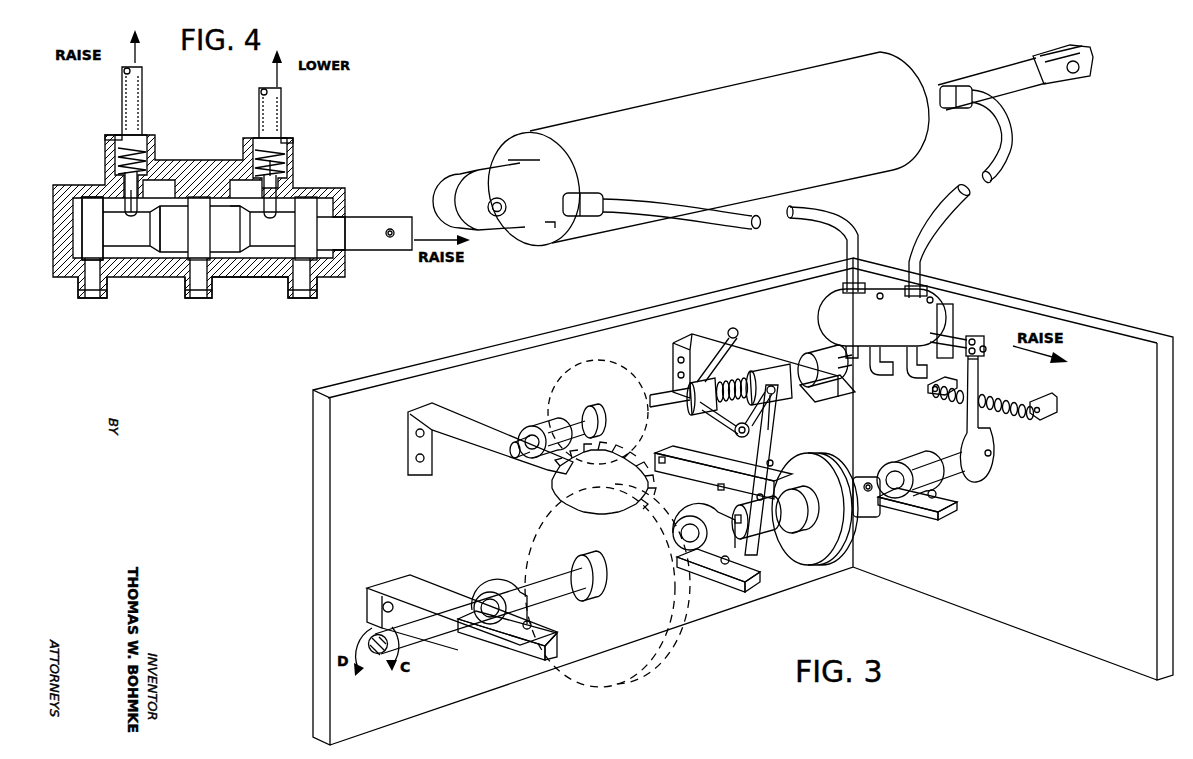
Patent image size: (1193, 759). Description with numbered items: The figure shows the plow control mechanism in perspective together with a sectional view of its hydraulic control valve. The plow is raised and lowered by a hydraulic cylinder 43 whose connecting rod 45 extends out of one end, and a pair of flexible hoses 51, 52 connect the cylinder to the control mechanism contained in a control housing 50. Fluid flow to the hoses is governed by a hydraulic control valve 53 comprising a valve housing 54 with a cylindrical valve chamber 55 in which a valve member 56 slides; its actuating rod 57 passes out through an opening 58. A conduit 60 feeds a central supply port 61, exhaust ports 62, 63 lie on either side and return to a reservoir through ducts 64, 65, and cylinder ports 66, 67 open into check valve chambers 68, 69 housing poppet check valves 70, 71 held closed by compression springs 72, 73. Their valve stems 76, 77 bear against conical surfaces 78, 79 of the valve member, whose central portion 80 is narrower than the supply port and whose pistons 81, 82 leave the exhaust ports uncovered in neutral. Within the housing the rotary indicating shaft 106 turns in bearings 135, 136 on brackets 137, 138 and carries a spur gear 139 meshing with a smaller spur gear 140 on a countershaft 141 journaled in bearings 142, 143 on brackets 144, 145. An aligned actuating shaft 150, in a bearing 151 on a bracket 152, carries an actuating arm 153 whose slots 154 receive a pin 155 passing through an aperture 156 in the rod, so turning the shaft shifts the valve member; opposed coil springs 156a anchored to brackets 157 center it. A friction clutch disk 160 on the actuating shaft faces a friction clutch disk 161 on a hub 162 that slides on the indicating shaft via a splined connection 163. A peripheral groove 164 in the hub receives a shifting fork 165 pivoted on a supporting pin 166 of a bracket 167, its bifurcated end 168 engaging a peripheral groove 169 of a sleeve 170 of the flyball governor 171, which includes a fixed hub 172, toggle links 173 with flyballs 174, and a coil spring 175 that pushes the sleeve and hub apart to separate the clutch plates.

In FIG. 3, the hydraulic cylinder 43 is at (870, 160).
In FIG. 3, the connecting rod 45 is at (1022, 80).
In FIG. 3, the control housing 50 is at (313, 527).
In FIG. 4, the flexible hose 51 is at (287, 92).
In FIG. 3, the flexible hose 51 is at (922, 235).
In FIG. 4, the flexible hose 52 is at (143, 88).
In FIG. 3, the flexible hose 52 is at (860, 238).
In FIG. 4, the hydraulic control valve 53 is at (315, 158).
In FIG. 3, the hydraulic control valve 53 is at (851, 323).
In FIG. 4, the valve housing 54 is at (330, 188).
In FIG. 3, the valve housing 54 is at (880, 327).
In FIG. 4, the valve chamber 55 is at (262, 277).
In FIG. 4, the valve member 56 is at (163, 246).
In FIG. 4, the actuating rod 57 is at (372, 218).
In FIG. 3, the actuating rod 57 is at (960, 334).
In FIG. 4, the opening 58 is at (340, 250).
In FIG. 4, the conduit 60 is at (188, 295).
In FIG. 3, the conduit 60 is at (878, 370).
In FIG. 4, the supply port 61 is at (196, 282).
In FIG. 4, the exhaust port 62 is at (93, 285).
In FIG. 4, the exhaust port 63 is at (300, 290).
In FIG. 4, the exhaust duct 64 is at (80, 284).
In FIG. 3, the exhaust duct 64 is at (846, 348).
In FIG. 4, the exhaust duct 65 is at (316, 293).
In FIG. 3, the exhaust duct 65 is at (914, 370).
In FIG. 4, the cylinder port 66 is at (188, 228).
In FIG. 4, the cylinder port 67 is at (236, 200).
In FIG. 4, the check valve chamber 68 is at (115, 152).
In FIG. 4, the check valve chamber 69 is at (256, 150).
In FIG. 4, the check valve 70 is at (125, 176).
In FIG. 4, the check valve 71 is at (255, 158).
In FIG. 4, the compression spring 72 is at (148, 138).
In FIG. 4, the compression spring 73 is at (291, 141).
In FIG. 4, the valve stem 76 is at (139, 176).
In FIG. 4, the valve stem 77 is at (282, 185).
In FIG. 4, the conical surface 78 is at (148, 243).
In FIG. 4, the conical surface 79 is at (271, 243).
In FIG. 4, the central portion 80 is at (201, 247).
In FIG. 4, the piston 81 is at (103, 238).
In FIG. 4, the piston 82 is at (306, 237).
In FIG. 3, the rotary indicating shaft 106 is at (420, 635).
In FIG. 3, the bearing 135 is at (498, 583).
In FIG. 3, the bearing 136 is at (708, 520).
In FIG. 3, the bracket 137 is at (428, 590).
In FIG. 3, the bracket 138 is at (750, 585).
In FIG. 3, the spur gear 139 is at (652, 494).
In FIG. 3, the spur gear 140 is at (626, 460).
In FIG. 3, the countershaft 141 is at (570, 428).
In FIG. 3, the bearing 142 is at (540, 425).
In FIG. 3, the bearing 143 is at (805, 352).
In FIG. 3, the bracket 144 is at (456, 430).
In FIG. 3, the bracket 145 is at (688, 336).
In FIG. 3, the actuating shaft 150 is at (953, 470).
In FIG. 3, the bearing 151 is at (912, 460).
In FIG. 3, the bracket 152 is at (950, 515).
In FIG. 3, the actuating arm 153 is at (978, 428).
In FIG. 3, the vertical slot 154 is at (979, 360).
In FIG. 3, the pin 155 is at (980, 343).
In FIG. 4, the aperture 156 is at (392, 240).
In FIG. 3, the coil spring 156a is at (975, 386).
In FIG. 3, the bracket 157 is at (932, 395).
In FIG. 3, the friction clutch disk 160 is at (832, 535).
In FIG. 3, the friction clutch disk 161 is at (830, 560).
In FIG. 3, the hub 162 is at (805, 568).
In FIG. 3, the splined connection 163 is at (766, 540).
In FIG. 3, the peripheral groove 164 is at (752, 533).
In FIG. 3, the shifting fork 165 is at (752, 500).
In FIG. 3, the supporting pin 166 is at (758, 493).
In FIG. 3, the bracket 167 is at (683, 462).
In FIG. 3, the bifurcated end 168 is at (775, 392).
In FIG. 3, the peripheral groove 169 is at (738, 378).
In FIG. 3, the sleeve 170 is at (776, 410).
In FIG. 3, the governor 171 is at (660, 392).
In FIG. 3, the hub 172 is at (648, 405).
In FIG. 3, the toggle link 173 is at (680, 380).
In FIG. 3, the flyball 174 is at (728, 336).
In FIG. 3, the coil spring 175 is at (775, 395).